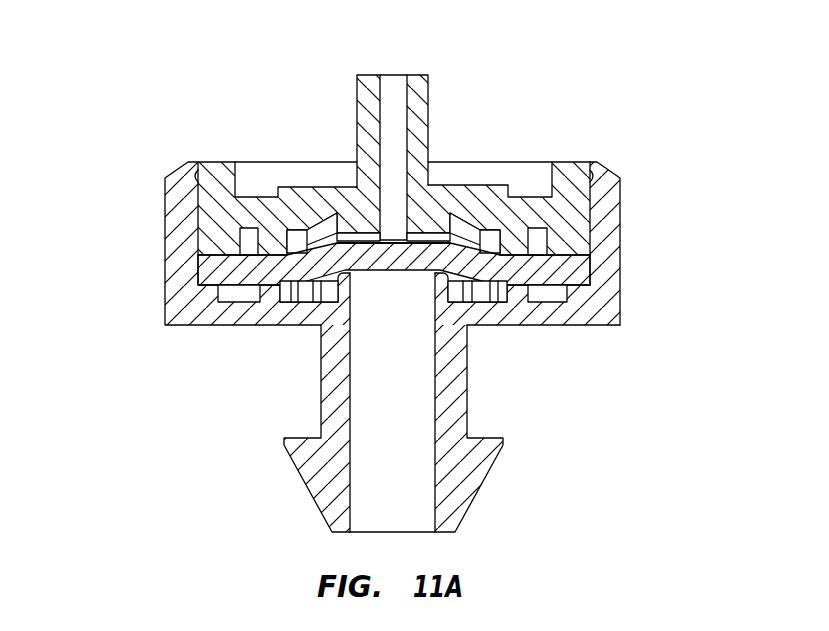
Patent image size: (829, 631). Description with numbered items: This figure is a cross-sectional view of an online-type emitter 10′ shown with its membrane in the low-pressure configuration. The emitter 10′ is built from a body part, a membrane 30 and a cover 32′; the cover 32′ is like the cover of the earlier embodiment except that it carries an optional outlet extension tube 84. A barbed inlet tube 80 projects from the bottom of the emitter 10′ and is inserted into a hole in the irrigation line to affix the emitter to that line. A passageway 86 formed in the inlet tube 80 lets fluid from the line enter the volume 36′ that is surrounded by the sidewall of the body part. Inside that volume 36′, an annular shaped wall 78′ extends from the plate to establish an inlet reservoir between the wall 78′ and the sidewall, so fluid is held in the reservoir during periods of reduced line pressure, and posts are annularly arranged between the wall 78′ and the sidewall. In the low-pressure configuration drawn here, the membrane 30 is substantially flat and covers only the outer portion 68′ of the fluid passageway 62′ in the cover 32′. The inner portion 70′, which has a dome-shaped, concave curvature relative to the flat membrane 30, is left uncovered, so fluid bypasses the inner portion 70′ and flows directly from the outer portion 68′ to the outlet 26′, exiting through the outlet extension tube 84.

The emitter 10′ is at (141, 231).
The cover 32′ is at (213, 163).
The fluid passageway 62′ is at (250, 240).
The outlet extension tube 84 is at (357, 98).
The outlet 26′ is at (399, 84).
The inner portion 70′ is at (465, 230).
The outer portion 68′ is at (545, 242).
The membrane 30 is at (577, 270).
The volume 36′ is at (547, 296).
The annular shaped wall 78′ is at (445, 295).
The passageway 86 is at (373, 422).
The inlet tube 80 is at (321, 350).